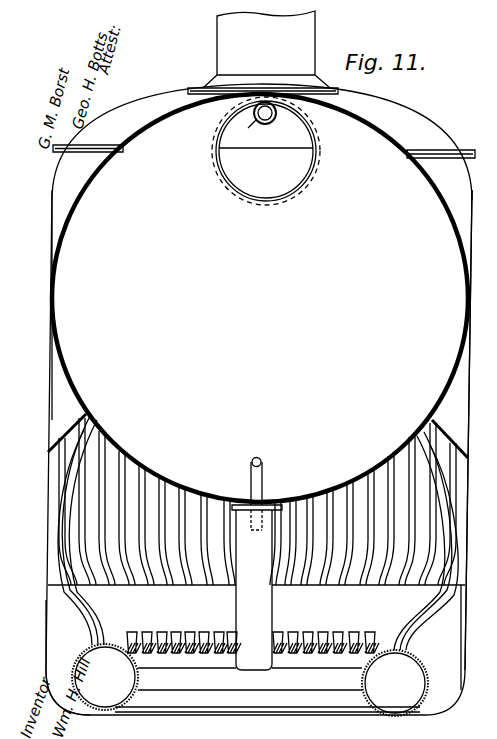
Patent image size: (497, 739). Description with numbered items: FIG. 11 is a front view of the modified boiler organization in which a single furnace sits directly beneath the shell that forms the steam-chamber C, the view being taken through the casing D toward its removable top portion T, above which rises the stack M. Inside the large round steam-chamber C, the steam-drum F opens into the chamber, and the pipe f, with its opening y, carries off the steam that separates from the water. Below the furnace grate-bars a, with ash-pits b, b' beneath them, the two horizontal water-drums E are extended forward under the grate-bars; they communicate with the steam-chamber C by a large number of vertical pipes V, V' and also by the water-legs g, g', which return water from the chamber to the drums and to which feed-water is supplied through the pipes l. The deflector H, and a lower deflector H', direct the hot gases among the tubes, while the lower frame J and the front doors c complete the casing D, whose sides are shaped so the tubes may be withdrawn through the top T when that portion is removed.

The smoke stack M is at (266, 49).
The top portion of the casing T is at (383, 100).
The steam-chamber C is at (260, 298).
The steam-drum F is at (278, 199).
The pipe opening y is at (268, 122).
The pipe f is at (248, 130).
The deflector H is at (67, 310).
The lower casing H' is at (53, 657).
The shell or casing D is at (266, 432).
The doors c is at (478, 430).
The ash-pits b is at (142, 501).
The water tubes b' is at (367, 504).
The feed-water pipes l is at (261, 480).
The water-legs g is at (257, 587).
The lower plate g' is at (267, 718).
The base frame J is at (250, 679).
The grate-bars a is at (168, 631).
The vertical pipes V is at (257, 533).
The connecting pipes V' is at (258, 540).
The water-drums E is at (112, 707).